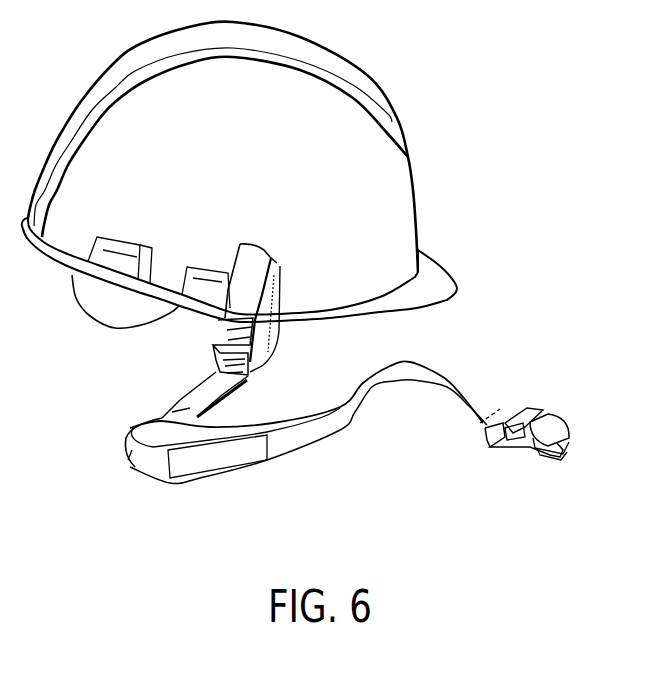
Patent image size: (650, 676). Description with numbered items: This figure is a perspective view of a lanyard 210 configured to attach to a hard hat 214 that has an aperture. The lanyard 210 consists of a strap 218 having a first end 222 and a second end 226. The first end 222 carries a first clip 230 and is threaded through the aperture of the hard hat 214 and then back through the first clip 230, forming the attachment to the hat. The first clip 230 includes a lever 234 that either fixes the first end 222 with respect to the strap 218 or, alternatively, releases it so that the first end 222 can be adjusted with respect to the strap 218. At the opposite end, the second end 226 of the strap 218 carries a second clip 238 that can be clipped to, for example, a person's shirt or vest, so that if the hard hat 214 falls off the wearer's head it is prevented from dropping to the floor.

The lanyard 210 is at (106, 510).
The hard hat 214 is at (362, 78).
The strap 218 is at (300, 440).
The first end 222 is at (255, 288).
The second end 226 is at (498, 413).
The first clip 230 is at (218, 335).
The lever 234 is at (214, 312).
The second clip 238 is at (560, 427).